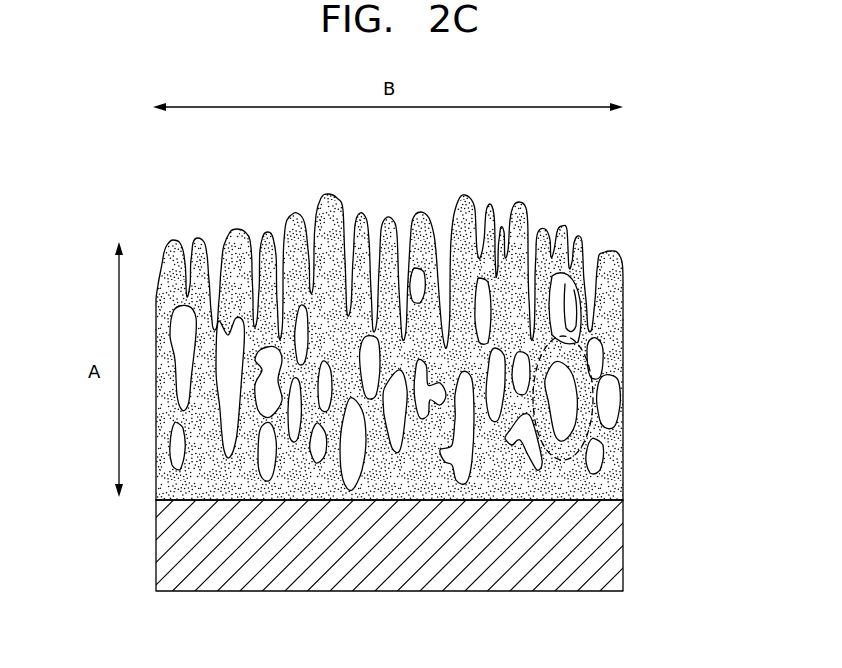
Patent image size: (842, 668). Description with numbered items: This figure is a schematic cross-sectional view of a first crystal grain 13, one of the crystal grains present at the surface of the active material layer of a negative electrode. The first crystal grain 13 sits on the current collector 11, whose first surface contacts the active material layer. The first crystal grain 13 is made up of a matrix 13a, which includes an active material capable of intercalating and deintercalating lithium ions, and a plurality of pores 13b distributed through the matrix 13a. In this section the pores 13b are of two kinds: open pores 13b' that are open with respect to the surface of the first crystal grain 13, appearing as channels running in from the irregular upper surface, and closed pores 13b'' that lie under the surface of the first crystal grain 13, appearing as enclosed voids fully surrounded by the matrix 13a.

The current collector 11 is at (670, 504).
The first crystal grain 13 is at (668, 193).
The matrix 13a is at (495, 475).
The pores 13b is at (329, 293).
The open pores 13b' is at (366, 233).
The closed pores 13b'' is at (235, 332).